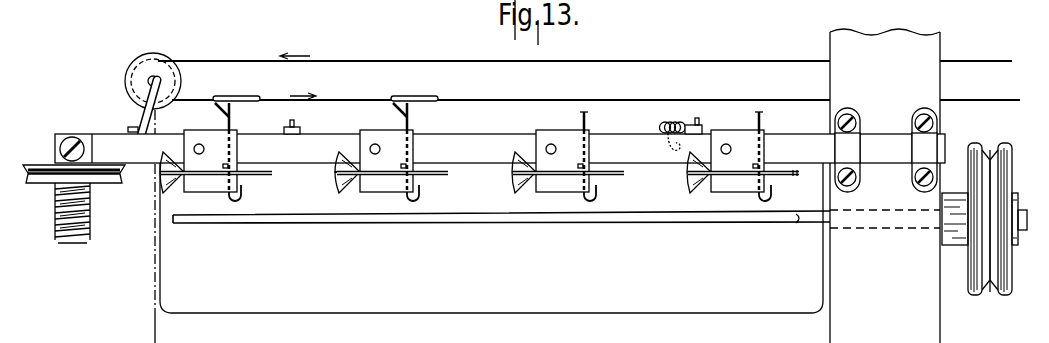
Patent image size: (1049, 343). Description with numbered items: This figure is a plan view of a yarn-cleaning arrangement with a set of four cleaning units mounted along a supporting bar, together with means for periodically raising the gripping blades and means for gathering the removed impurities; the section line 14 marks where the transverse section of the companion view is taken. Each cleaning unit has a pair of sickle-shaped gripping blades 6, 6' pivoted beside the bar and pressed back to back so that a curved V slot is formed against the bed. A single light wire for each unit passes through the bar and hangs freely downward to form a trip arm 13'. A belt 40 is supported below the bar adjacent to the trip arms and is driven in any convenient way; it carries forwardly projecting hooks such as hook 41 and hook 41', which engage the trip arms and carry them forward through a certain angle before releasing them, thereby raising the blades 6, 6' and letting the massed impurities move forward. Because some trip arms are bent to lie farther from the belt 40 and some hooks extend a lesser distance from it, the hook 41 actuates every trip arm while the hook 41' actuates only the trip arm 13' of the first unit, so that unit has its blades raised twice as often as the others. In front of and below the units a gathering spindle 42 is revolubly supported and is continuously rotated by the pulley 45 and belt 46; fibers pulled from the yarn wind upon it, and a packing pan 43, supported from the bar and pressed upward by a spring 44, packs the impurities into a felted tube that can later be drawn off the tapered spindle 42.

The section line 14 is at (143, 321).
The belt 40 is at (497, 61).
The hook 41 is at (223, 110).
The hook 41' is at (400, 110).
The trip arm 13' is at (246, 152).
The gripping blade 6 is at (337, 186).
The gripping blade 6' is at (336, 157).
The spring 44 is at (665, 122).
The gathering spindle 42 is at (575, 221).
The packing pan 43 is at (491, 238).
The pulley 45 is at (1007, 176).
The belt 46 is at (991, 292).